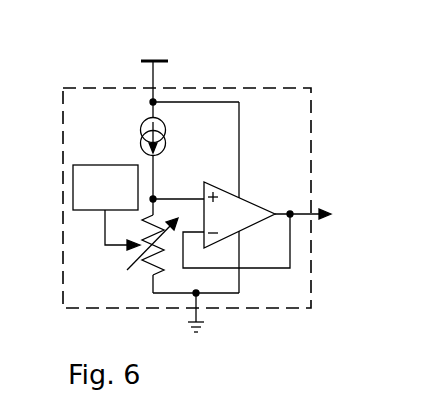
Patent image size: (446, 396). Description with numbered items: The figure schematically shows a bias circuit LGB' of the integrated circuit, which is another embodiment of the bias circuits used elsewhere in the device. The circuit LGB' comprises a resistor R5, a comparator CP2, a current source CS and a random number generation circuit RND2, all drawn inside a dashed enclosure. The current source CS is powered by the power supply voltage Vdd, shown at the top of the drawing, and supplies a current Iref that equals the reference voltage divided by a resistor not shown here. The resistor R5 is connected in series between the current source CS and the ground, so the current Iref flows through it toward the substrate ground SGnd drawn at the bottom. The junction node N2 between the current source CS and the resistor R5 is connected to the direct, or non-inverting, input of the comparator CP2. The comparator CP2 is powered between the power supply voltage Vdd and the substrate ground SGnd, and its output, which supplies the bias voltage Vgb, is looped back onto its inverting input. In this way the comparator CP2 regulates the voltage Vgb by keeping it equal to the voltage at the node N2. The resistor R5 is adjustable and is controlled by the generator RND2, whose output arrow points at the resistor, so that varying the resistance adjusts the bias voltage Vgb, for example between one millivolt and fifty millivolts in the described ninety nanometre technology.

The bias circuit LGB' is at (187, 198).
The power supply voltage Vdd is at (156, 77).
The current source CS is at (142, 124).
The current Iref is at (177, 137).
The junction node N2 is at (154, 196).
The random number generation circuit RND2 is at (106, 207).
The resistor R5 is at (128, 261).
The comparator CP2 is at (245, 224).
The bias voltage Vgb is at (325, 215).
The substrate ground SGnd is at (207, 322).